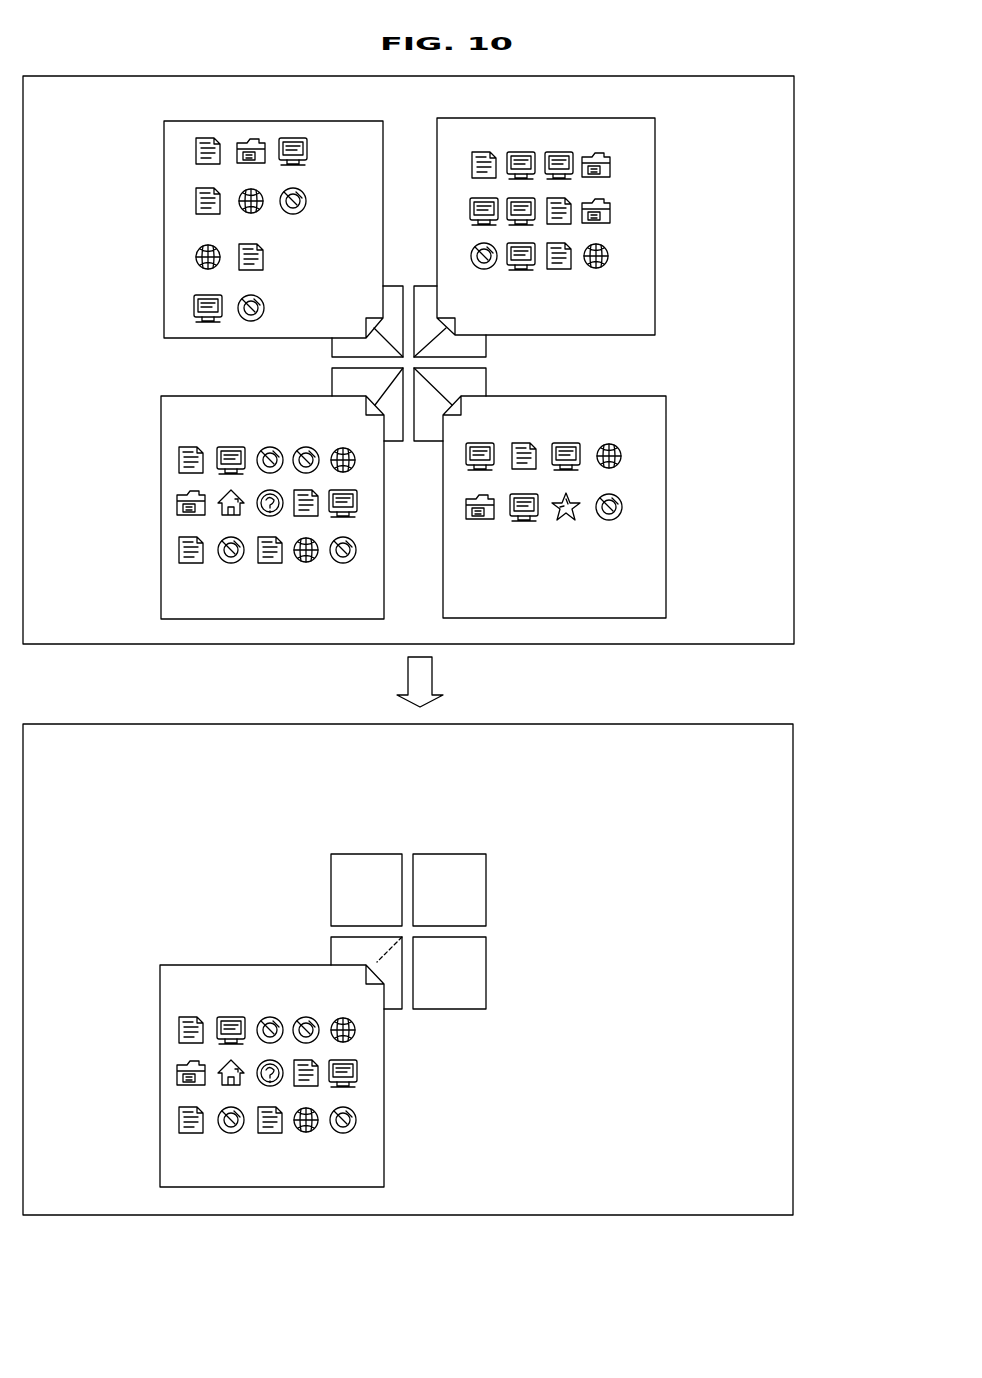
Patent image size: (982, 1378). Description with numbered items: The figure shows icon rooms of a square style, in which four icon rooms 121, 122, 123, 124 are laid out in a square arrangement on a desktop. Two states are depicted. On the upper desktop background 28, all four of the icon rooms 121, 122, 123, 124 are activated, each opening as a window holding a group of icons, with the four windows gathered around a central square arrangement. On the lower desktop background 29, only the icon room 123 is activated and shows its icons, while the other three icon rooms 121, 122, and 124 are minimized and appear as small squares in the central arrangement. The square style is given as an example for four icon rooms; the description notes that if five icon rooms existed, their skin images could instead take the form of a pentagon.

The desktop background 28 is at (794, 357).
The desktop background 29 is at (793, 955).
The icon room 121 is at (164, 205).
The icon room 122 is at (655, 193).
The icon room 123 is at (161, 487).
The icon room 124 is at (666, 487).